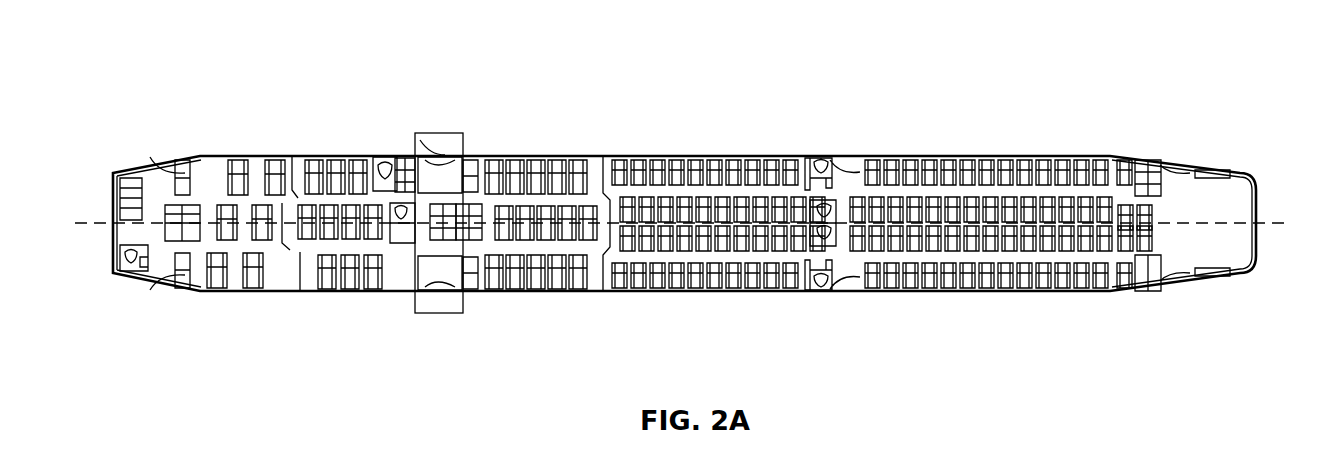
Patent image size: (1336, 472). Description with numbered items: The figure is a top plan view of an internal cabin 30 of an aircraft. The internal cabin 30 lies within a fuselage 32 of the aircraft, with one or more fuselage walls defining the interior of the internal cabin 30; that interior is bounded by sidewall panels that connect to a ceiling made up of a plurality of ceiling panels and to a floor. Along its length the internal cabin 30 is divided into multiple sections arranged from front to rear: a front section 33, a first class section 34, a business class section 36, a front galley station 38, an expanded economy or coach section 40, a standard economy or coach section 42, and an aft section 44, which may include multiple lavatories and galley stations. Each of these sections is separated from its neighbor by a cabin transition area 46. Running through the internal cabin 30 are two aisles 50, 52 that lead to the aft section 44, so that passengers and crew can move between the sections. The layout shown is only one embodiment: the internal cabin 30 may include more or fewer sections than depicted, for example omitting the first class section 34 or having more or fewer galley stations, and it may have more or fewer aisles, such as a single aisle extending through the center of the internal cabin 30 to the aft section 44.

The internal cabin 30 is at (244, 66).
The fuselage 32 is at (553, 118).
The front section 33 is at (170, 303).
The first class section 34 is at (258, 293).
The business class section 36 is at (325, 155).
The front galley station 38 is at (438, 313).
The expanded economy or coach section 40 is at (530, 293).
The standard economy or coach section 42 is at (653, 155).
The aft section 44 is at (1183, 180).
The cabin transition area 46 is at (185, 155).
The aisle 50 is at (990, 193).
The aisle 52 is at (1007, 258).